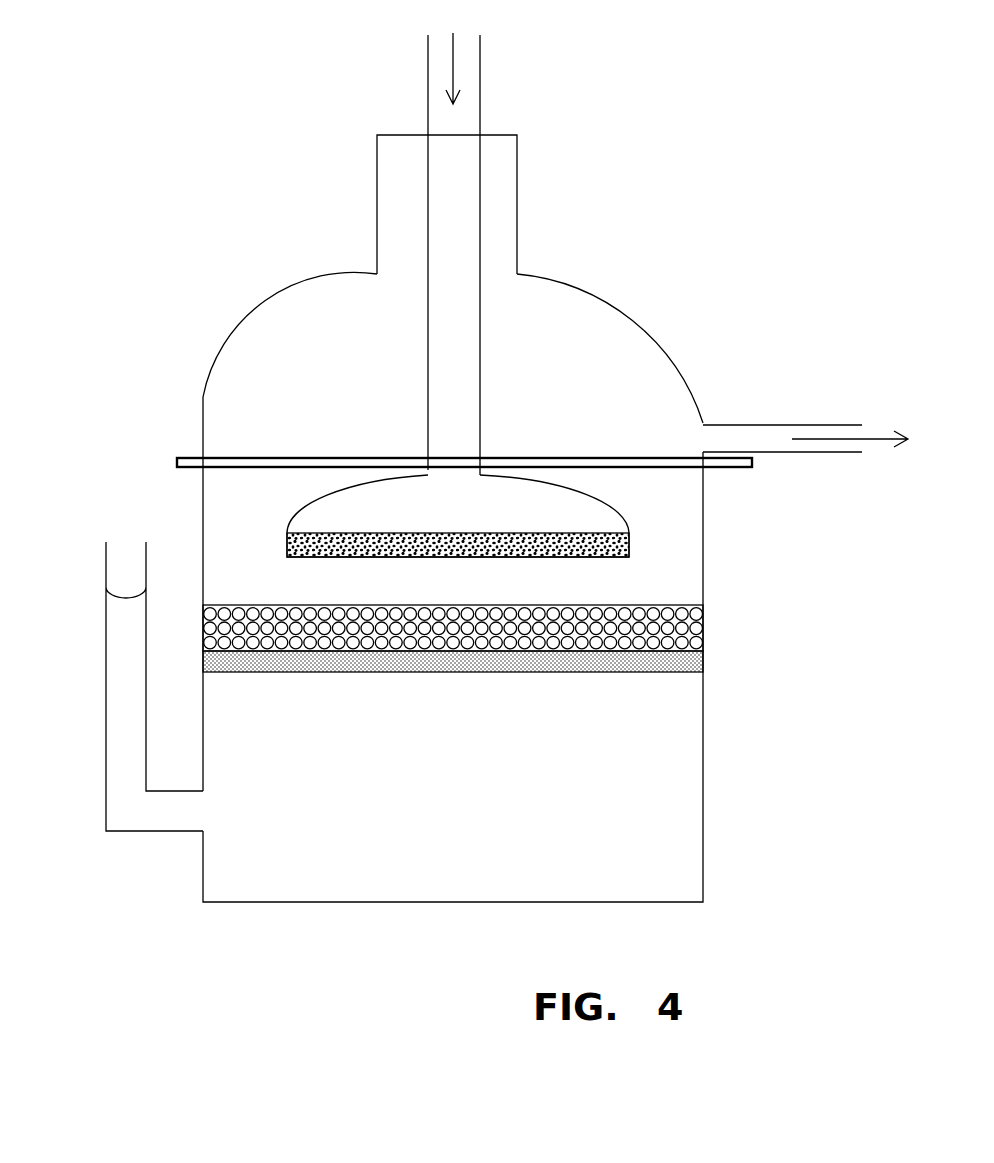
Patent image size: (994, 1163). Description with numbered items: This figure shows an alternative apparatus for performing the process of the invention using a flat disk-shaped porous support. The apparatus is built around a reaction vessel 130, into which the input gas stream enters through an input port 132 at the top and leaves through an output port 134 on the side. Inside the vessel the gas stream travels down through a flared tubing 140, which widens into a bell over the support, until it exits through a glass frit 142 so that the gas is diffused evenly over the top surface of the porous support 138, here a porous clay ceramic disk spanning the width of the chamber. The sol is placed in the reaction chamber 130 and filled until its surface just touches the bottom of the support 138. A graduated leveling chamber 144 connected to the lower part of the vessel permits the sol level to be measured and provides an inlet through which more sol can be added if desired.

The reaction vessel 130 is at (720, 731).
The input port 132 is at (465, 78).
The output port 134 is at (782, 437).
The porous support 138 is at (703, 618).
The flared tubing 140 is at (462, 215).
The glass frit 142 is at (629, 550).
The graduated leveling chamber 144 is at (123, 692).